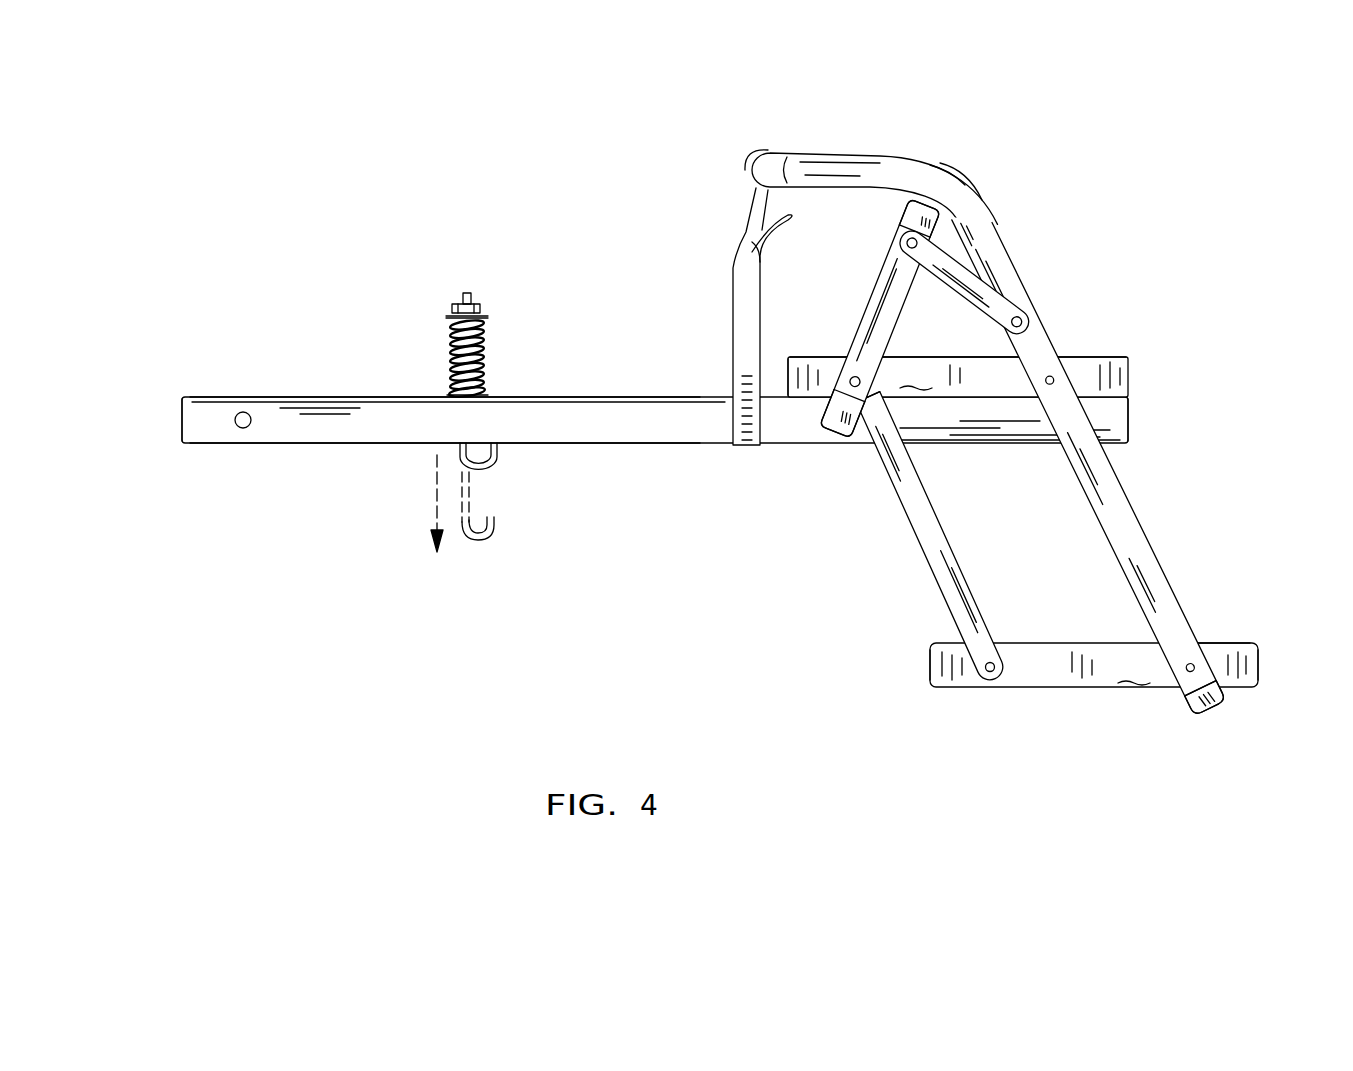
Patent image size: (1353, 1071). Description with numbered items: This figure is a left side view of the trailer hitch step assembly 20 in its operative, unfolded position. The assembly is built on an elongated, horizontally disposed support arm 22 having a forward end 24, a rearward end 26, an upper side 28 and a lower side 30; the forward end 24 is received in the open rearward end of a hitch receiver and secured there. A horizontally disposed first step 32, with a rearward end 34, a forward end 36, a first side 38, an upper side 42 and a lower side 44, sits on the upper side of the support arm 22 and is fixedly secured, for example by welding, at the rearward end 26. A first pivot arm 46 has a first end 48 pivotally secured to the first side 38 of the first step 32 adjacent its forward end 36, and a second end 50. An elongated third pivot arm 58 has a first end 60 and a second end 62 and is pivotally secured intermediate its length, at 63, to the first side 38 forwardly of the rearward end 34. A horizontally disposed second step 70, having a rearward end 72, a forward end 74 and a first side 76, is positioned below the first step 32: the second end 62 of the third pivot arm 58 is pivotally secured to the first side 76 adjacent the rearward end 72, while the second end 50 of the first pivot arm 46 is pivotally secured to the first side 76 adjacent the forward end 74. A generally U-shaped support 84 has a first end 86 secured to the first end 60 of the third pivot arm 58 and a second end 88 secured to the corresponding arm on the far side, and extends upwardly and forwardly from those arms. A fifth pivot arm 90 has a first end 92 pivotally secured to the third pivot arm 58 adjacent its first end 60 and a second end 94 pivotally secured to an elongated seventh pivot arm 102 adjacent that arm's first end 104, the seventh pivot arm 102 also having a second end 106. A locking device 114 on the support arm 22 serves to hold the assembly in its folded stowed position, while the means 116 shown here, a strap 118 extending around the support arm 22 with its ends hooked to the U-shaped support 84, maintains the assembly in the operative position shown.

The trailer hitch step assembly 20 is at (904, 148).
The support arm 22 is at (598, 393).
The forward end of support arm 24 is at (182, 421).
The rearward end of support arm 26 is at (1132, 412).
The upper side of support arm 28 is at (328, 397).
The lower side of support arm 30 is at (352, 443).
The first step 32 is at (1104, 345).
The rearward end of first step 34 is at (1019, 404).
The forward end of first step 36 is at (788, 378).
The first side of first step 38 is at (958, 376).
The upper side of first step 42 is at (943, 357).
The lower side of first step 44 is at (1000, 403).
The first pivot arm 46 is at (921, 547).
The first end of first pivot arm 48 is at (864, 402).
The second end of first pivot arm 50 is at (1000, 680).
The third pivot arm 58 is at (1144, 545).
The first end of third pivot arm 60 is at (968, 225).
The second end of third pivot arm 62 is at (1214, 712).
The intermediate pivot of third pivot arm 63 is at (1055, 379).
The second step 70 is at (1230, 640).
The rearward end of second step 72 is at (1260, 668).
The forward end of second step 74 is at (935, 660).
The first side of second step 76 is at (1094, 665).
The U-shaped support 84 is at (858, 150).
The first end of U-shaped support 86 is at (973, 208).
The second end of U-shaped support 88 is at (757, 178).
The fifth pivot arm 90 is at (950, 270).
The first end of fifth pivot arm 92 is at (1022, 314).
The second end of fifth pivot arm 94 is at (906, 238).
The seventh pivot arm 102 is at (850, 362).
The first end of seventh pivot arm 104 is at (827, 428).
The second end of seventh pivot arm 106 is at (922, 208).
The locking device 114 is at (485, 348).
The means for maintaining operative position 116 is at (726, 264).
The strap 118 is at (745, 318).